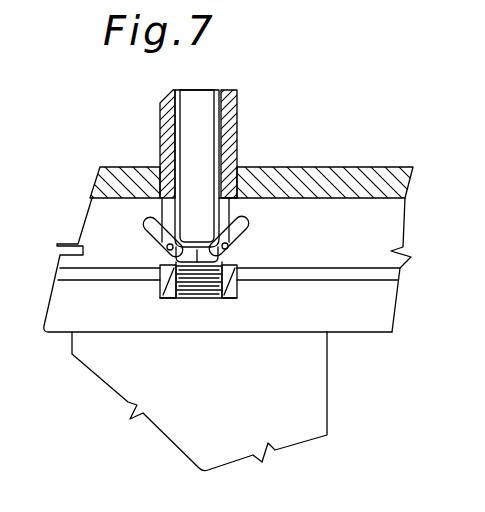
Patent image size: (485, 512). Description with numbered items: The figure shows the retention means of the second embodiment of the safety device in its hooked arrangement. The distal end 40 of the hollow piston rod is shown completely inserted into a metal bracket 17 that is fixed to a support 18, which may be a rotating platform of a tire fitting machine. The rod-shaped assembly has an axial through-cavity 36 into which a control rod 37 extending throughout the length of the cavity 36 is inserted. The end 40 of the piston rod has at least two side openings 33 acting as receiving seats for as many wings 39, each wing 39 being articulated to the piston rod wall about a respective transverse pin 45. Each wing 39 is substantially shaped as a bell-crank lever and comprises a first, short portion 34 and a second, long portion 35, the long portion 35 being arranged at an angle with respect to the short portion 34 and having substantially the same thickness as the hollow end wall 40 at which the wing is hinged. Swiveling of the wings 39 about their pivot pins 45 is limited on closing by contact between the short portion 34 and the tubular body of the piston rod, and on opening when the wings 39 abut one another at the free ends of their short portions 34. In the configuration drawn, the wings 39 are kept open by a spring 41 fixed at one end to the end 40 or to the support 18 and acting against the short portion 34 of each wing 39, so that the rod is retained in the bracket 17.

The metal bracket 17 is at (363, 170).
The support 18 is at (378, 333).
The side openings 33 is at (228, 214).
The first (short) portion 34 is at (193, 262).
The second (long) portion 35 is at (158, 226).
The axial through-cavity 36 is at (224, 143).
The control rod 37 is at (172, 99).
The wings 39 is at (136, 220).
The distal end of hollow piston rod 40 is at (160, 128).
The spring 41 is at (210, 272).
The transverse pin 45 is at (150, 265).